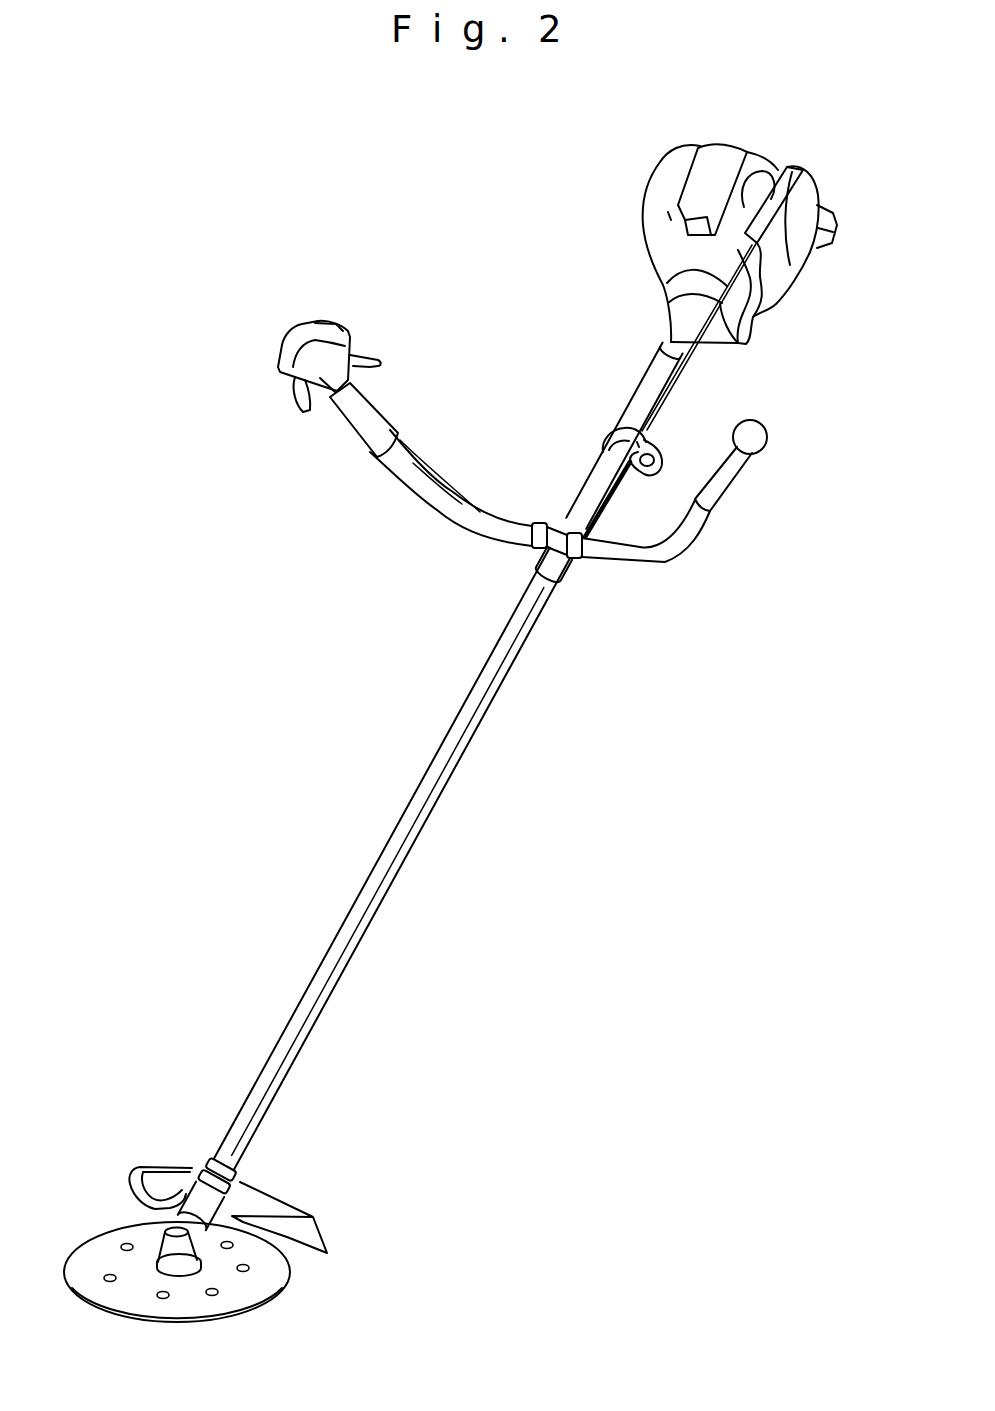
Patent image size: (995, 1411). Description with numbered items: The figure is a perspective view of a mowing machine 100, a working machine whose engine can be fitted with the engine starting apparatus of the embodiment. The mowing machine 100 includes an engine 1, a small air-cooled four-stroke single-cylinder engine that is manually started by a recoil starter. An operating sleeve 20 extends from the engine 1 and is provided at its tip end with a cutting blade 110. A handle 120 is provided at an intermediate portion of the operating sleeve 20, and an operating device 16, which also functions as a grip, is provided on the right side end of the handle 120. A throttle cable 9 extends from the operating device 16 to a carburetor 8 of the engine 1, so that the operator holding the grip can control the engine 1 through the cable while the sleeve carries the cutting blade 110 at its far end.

The engine 1 is at (726, 156).
The carburetor 8 is at (806, 200).
The throttle cable 9 is at (700, 347).
The operating device 16 is at (348, 338).
The operating sleeve 20 is at (386, 846).
The mowing machine 100 is at (497, 781).
The cutting blade 110 is at (274, 1262).
The handle 120 is at (658, 566).